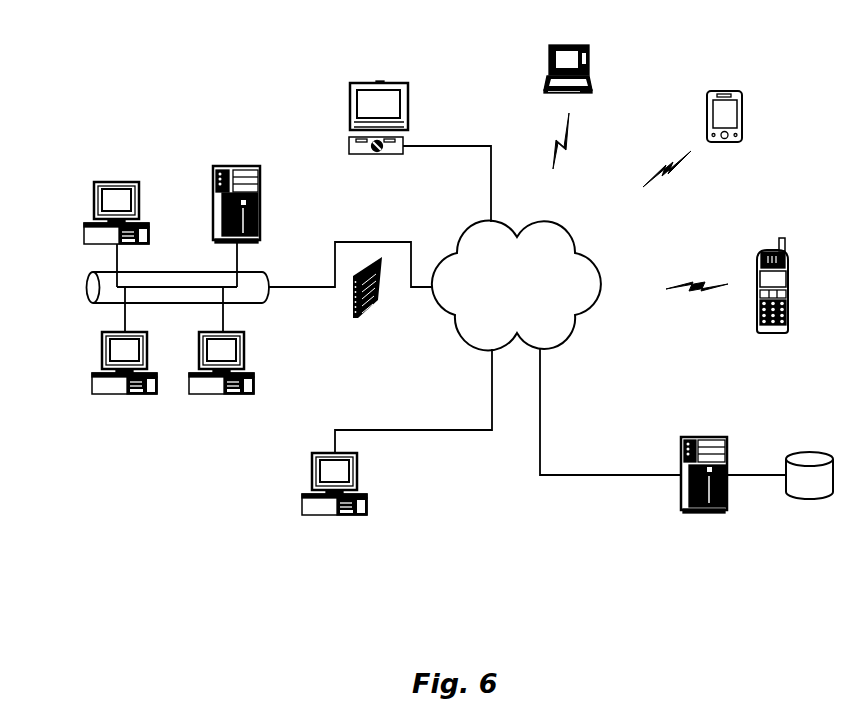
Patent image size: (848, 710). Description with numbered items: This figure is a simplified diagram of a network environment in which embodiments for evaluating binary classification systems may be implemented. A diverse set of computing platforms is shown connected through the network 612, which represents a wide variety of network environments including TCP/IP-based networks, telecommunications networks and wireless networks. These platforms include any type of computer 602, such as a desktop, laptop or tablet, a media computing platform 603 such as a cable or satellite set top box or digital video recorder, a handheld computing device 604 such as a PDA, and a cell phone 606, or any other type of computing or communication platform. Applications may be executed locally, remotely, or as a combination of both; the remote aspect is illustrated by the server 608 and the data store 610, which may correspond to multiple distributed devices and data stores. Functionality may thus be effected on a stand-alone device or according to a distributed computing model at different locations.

The computer 602 is at (95, 205).
The media computing platform 603 is at (349, 142).
The handheld computing device 604 is at (710, 91).
The cell phone 606 is at (760, 255).
The server 608 is at (690, 437).
The data store 610 is at (805, 450).
The network 612 is at (467, 235).